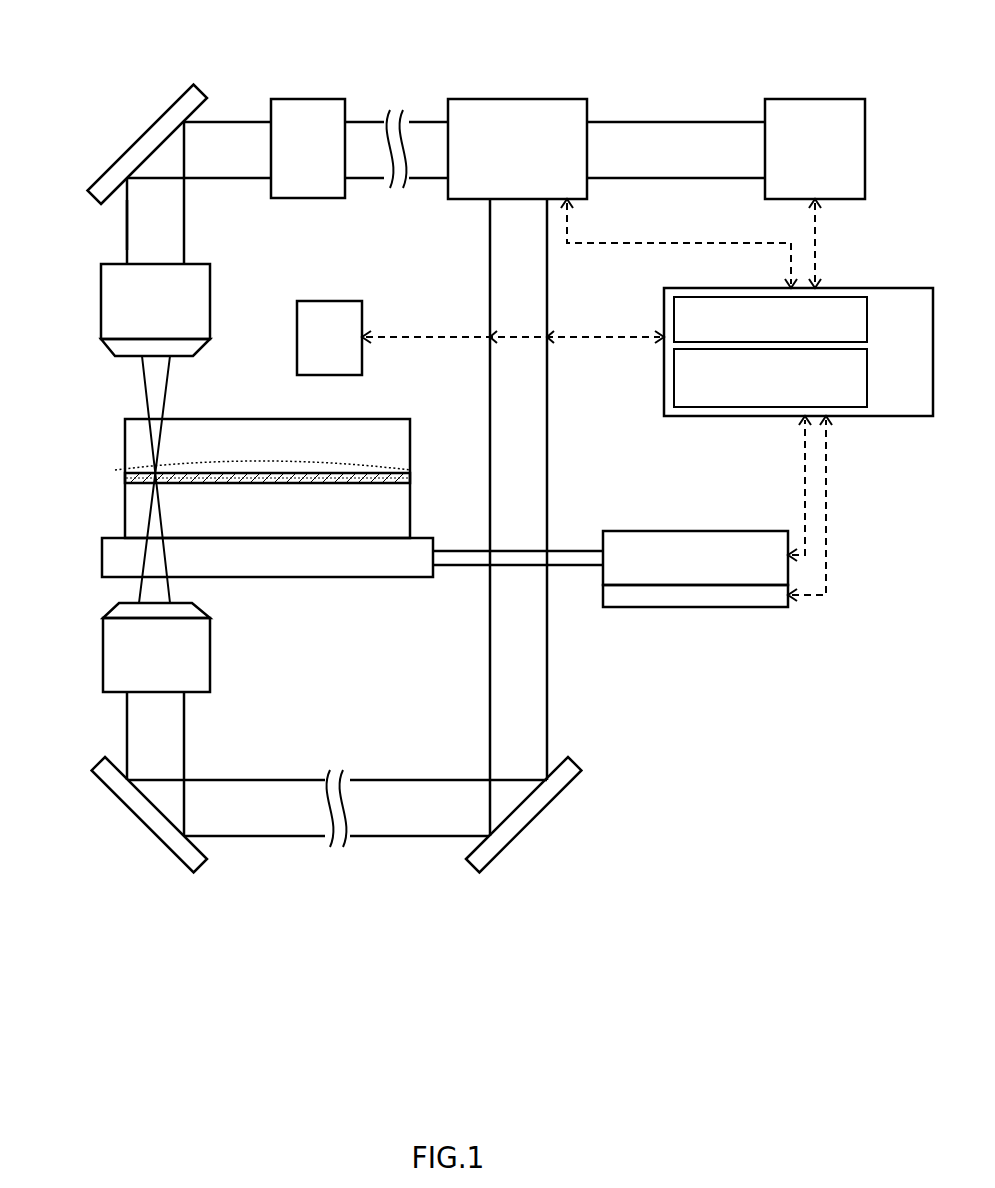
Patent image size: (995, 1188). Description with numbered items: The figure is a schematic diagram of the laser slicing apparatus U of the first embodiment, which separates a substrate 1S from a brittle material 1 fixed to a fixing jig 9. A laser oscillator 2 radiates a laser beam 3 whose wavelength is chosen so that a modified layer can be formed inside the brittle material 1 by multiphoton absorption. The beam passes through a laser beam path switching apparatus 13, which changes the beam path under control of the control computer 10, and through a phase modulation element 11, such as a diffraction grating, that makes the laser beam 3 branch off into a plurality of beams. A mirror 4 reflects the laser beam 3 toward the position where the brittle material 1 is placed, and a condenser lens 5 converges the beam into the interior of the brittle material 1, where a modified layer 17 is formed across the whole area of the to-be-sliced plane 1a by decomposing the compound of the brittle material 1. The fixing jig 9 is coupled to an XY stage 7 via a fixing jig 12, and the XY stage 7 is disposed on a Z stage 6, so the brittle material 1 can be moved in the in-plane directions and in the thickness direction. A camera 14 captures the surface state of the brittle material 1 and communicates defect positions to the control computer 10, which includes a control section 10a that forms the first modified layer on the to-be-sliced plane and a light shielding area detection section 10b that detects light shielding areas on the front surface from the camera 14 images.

The laser slicing apparatus U is at (68, 40).
The brittle material 1 is at (269, 478).
The substrate 1S is at (423, 447).
The to-be-sliced plane 1a is at (410, 470).
The modified layer 17 is at (412, 483).
The laser oscillator 2 is at (820, 99).
The laser beam 3 is at (127, 222).
The mirror 4 is at (176, 100).
The condenser lens 5 is at (101, 300).
The Z stage 6 is at (697, 607).
The XY stage 7 is at (700, 531).
The fixing jig 9 is at (102, 555).
The control computer 10 is at (798, 330).
The control section 10a is at (867, 330).
The light shielding area detection section 10b is at (867, 383).
The phase modulation element 11 is at (310, 99).
The fixing jig 12 is at (562, 565).
The laser beam path switching apparatus 13 is at (520, 99).
The camera 14 is at (330, 301).